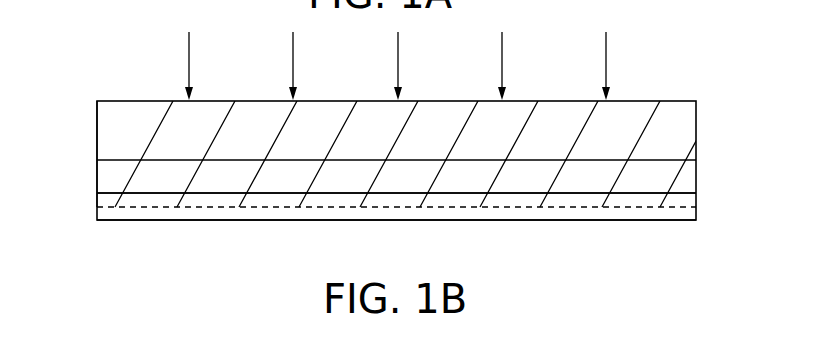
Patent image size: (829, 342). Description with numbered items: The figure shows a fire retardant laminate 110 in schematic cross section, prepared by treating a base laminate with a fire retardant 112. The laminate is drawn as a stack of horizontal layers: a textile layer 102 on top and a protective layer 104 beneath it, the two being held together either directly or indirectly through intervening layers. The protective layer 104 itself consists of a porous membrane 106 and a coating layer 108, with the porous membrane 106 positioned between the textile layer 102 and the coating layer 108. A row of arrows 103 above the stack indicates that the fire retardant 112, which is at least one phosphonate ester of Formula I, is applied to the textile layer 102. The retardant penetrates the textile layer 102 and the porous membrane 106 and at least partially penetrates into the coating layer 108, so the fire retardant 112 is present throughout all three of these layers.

The fire retardant laminate 110 is at (139, 76).
The textile layer 102 is at (706, 153).
The protective layer 104 is at (706, 220).
The porous membrane 106 is at (190, 173).
The coating layer 108 is at (628, 213).
The fire retardant 112 is at (83, 207).
The arrows 103 is at (527, 52).